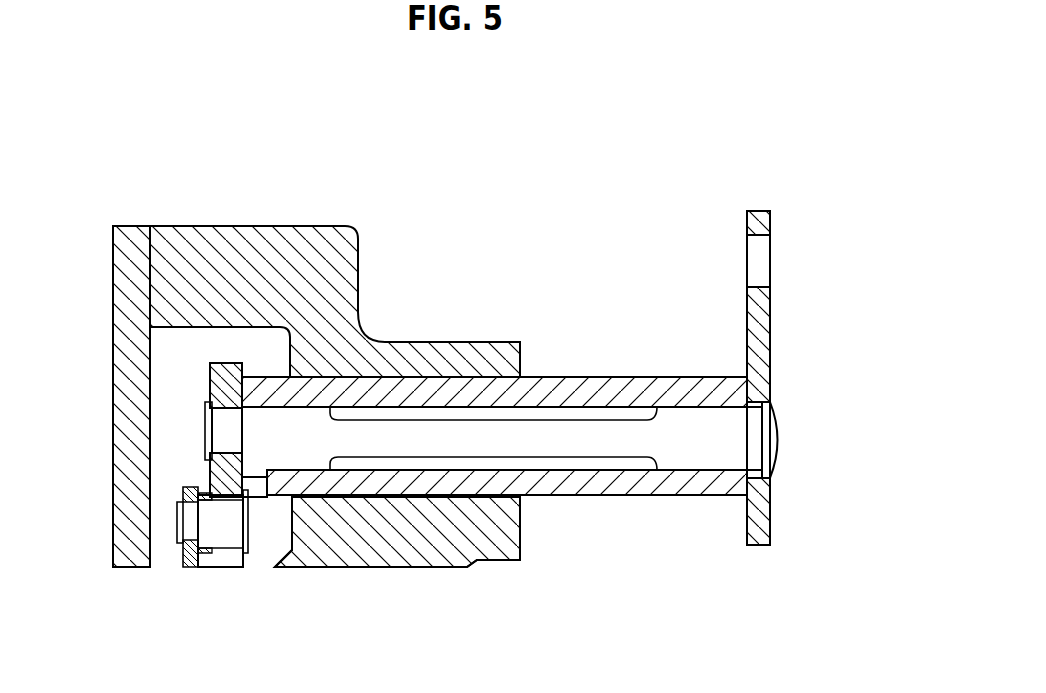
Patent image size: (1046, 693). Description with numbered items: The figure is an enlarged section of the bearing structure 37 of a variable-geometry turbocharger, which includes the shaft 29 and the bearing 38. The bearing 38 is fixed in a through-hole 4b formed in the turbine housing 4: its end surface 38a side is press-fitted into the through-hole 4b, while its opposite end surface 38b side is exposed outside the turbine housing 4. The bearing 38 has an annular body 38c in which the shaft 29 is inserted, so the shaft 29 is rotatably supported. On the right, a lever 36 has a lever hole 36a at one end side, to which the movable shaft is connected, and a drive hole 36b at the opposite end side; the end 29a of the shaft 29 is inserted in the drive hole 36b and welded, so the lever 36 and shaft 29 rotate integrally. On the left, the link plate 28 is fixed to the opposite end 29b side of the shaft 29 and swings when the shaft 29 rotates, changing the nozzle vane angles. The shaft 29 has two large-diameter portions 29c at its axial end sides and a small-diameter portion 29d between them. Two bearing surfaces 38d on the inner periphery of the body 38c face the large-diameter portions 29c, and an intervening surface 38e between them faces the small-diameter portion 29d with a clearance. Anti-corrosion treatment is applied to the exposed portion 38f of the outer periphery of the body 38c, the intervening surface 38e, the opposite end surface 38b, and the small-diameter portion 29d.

The turbine housing 4 is at (217, 226).
The through-hole 4b is at (418, 388).
The link plate 28 is at (205, 478).
The shaft 29 is at (597, 417).
The end of shaft 29a is at (780, 434).
The opposite end of shaft 29b is at (203, 430).
The large-diameter portion 29c is at (268, 405).
The small-diameter portion 29d is at (478, 418).
The lever 36 is at (758, 212).
The lever hole 36a is at (768, 280).
The drive hole 36b is at (763, 460).
The bearing structure 37 is at (765, 126).
The bearing 38 is at (397, 585).
The end surface 38a is at (245, 515).
The opposite end surface 38b is at (755, 478).
The annular body 38c is at (425, 550).
The bearing surface 38d is at (282, 490).
The intervening surface 38e is at (493, 468).
The exposed portion 38f is at (607, 497).